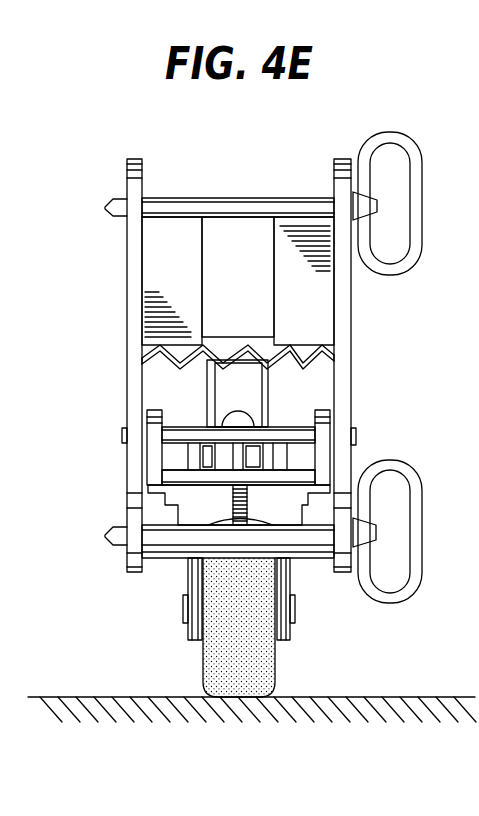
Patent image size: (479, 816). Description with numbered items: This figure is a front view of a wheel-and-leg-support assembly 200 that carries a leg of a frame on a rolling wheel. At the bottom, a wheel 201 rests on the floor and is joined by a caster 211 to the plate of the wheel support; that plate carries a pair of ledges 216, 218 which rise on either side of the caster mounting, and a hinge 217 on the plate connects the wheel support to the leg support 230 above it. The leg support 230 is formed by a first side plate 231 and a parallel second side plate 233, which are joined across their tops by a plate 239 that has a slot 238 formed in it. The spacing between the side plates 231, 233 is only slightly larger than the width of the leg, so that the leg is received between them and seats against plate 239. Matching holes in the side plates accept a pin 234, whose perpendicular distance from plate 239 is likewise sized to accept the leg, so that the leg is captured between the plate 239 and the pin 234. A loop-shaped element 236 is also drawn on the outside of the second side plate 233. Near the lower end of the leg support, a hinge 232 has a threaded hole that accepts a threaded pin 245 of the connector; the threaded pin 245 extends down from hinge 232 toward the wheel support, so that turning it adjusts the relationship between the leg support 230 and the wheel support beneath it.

The cart assembly 200 is at (128, 120).
The wheel 201 is at (203, 673).
The caster 211 is at (108, 648).
The ledge 216 is at (152, 410).
The hinge 217 is at (358, 435).
The ledge 218 is at (323, 410).
The leg support 230 is at (103, 253).
The first side plate 231 is at (126, 375).
The hinge 232 is at (165, 557).
The second side plate 233 is at (352, 318).
The pin 234 is at (390, 603).
The upper handle loop 236 is at (390, 275).
The slot 238 is at (273, 253).
The plate 239 is at (170, 268).
The threaded pin 245 is at (230, 500).